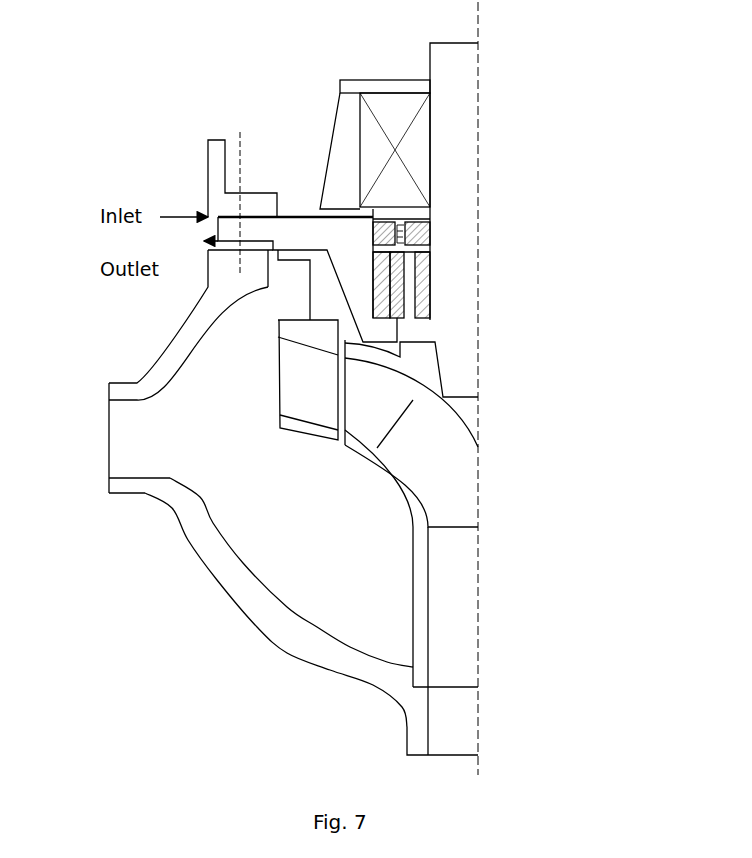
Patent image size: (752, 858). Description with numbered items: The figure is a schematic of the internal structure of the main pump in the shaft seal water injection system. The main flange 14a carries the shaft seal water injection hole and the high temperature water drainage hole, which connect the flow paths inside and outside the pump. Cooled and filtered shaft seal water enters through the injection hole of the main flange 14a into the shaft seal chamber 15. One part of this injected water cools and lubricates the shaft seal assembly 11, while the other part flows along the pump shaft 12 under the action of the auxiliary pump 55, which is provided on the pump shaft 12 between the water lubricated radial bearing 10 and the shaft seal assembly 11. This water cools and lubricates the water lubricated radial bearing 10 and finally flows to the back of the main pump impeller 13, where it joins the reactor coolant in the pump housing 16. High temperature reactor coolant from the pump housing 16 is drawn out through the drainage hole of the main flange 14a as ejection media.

The pump shaft 12 is at (457, 117).
The shaft seal assembly 11 is at (395, 183).
The auxiliary pump 55 is at (433, 225).
The water lubricated radial bearing 10 is at (410, 268).
The main pump impeller 13 is at (418, 377).
The shaft seal chamber 15 is at (396, 213).
The main pump housing 16 is at (162, 342).
The main flange 14a is at (214, 215).